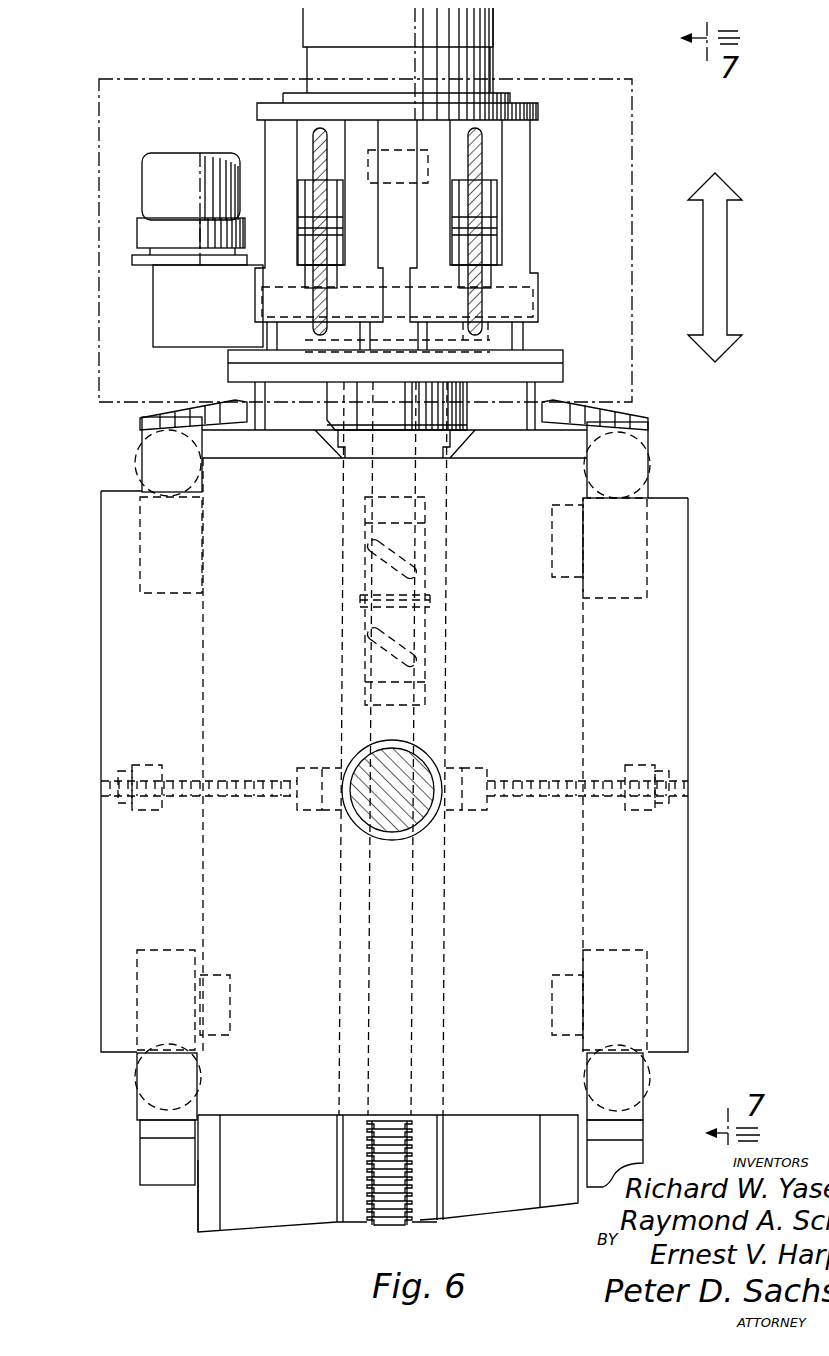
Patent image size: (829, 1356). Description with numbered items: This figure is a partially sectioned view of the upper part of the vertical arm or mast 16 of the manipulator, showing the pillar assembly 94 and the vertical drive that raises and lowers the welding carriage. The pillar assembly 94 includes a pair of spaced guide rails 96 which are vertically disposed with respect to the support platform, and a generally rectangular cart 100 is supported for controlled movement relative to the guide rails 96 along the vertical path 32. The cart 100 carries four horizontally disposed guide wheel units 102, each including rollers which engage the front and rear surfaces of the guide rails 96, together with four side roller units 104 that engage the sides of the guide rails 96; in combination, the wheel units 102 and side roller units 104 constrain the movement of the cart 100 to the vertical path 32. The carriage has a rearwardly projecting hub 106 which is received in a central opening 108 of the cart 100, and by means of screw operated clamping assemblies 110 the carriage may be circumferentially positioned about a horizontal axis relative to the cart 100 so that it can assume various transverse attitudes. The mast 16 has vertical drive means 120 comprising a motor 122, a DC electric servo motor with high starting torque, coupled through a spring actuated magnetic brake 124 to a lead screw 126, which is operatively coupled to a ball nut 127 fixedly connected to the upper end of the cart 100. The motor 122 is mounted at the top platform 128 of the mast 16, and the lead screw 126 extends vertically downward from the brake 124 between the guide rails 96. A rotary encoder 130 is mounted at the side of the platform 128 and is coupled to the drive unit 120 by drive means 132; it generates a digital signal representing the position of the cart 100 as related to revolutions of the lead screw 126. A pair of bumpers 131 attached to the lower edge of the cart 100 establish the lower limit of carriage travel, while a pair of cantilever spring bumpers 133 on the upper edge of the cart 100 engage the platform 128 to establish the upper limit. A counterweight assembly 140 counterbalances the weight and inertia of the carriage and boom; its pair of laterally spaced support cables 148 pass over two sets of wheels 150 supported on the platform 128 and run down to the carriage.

The vertical arm or mast 16 is at (198, 1197).
The vertical path 32 is at (725, 272).
The pillar assembly 94 is at (198, 1222).
The guide rails 96 is at (249, 1210).
The cart 100 is at (135, 658).
The guide wheel units 102 is at (190, 562).
The side roller units 104 is at (133, 460).
The hub 106 is at (385, 822).
The central opening 108 is at (365, 748).
The screw operated clamping assemblies 110 is at (300, 770).
The vertical drive means 120 is at (303, 67).
The motor 122 is at (498, 22).
The spring actuated magnetic brake 124 is at (305, 290).
The lead screw 126 is at (367, 1185).
The ball nut 127 is at (430, 590).
The top platform 128 is at (515, 218).
The rotary encoder 130 is at (152, 173).
The bumpers 131 is at (158, 1150).
The drive means 132 is at (160, 290).
The cantilever spring bumpers 133 is at (226, 400).
The counterweight assembly 140 is at (313, 147).
The support cables 148 is at (322, 313).
The wheels 150 is at (330, 248).